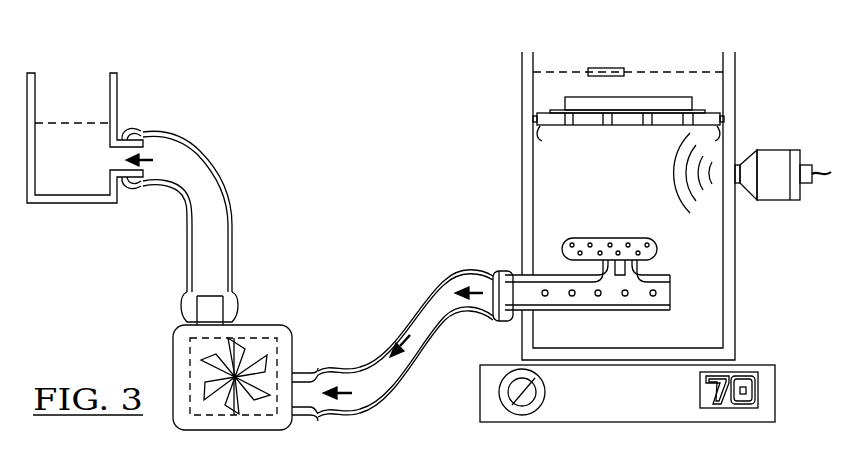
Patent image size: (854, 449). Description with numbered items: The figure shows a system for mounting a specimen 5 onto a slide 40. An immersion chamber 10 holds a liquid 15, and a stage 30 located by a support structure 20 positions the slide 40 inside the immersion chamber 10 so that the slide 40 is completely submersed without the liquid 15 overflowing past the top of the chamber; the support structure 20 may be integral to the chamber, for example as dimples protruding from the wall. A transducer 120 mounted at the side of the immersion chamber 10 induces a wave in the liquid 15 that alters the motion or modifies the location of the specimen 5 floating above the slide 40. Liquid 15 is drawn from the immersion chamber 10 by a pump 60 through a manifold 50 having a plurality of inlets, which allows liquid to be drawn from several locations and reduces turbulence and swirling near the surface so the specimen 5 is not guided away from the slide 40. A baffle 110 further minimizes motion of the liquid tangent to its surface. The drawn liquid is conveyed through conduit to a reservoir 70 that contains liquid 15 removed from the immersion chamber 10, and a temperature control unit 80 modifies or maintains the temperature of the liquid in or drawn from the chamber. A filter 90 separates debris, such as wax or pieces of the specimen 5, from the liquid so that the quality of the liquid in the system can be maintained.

The specimen 5 is at (610, 67).
The immersion chamber 10 is at (727, 260).
The liquid 15 is at (69, 143).
The support structure 20 is at (719, 147).
The stage 30 is at (707, 118).
The slide 40 is at (647, 102).
The manifold 50 is at (563, 292).
The pump 60 is at (262, 338).
The reservoir 70 is at (117, 94).
The temperature control unit 80 is at (768, 385).
The filter 90 is at (562, 108).
The baffle 110 is at (583, 240).
The transducer 120 is at (796, 150).